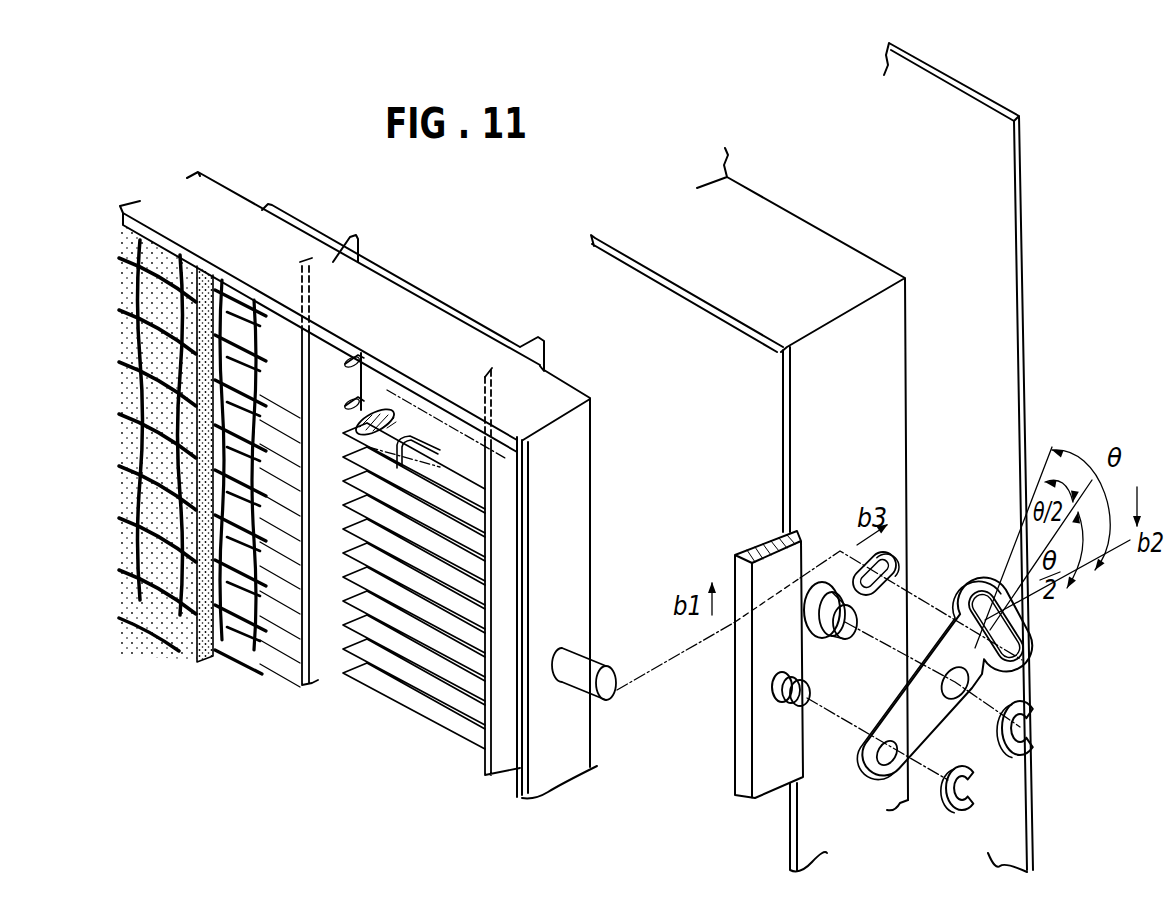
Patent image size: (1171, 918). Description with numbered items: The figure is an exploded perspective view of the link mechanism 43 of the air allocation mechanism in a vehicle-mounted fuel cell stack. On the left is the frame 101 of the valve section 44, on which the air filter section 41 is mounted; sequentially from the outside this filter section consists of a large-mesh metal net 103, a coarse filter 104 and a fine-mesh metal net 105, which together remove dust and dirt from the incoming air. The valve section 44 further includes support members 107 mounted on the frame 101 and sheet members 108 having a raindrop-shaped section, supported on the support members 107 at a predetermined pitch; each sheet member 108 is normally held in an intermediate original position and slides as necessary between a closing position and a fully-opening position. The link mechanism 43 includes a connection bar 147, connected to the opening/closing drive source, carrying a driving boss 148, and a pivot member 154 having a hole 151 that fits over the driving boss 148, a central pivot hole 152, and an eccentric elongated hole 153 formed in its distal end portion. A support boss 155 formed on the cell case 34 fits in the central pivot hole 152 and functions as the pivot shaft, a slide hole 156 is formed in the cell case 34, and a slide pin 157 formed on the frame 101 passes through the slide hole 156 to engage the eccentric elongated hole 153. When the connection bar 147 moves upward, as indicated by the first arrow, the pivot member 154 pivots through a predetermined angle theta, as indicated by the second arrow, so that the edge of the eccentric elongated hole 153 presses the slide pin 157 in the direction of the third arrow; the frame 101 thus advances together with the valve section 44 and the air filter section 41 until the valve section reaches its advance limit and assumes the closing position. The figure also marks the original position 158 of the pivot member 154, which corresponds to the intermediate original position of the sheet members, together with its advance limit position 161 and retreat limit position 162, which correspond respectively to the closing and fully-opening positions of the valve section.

The cell case 34 is at (661, 221).
The air filter section 41 is at (232, 695).
The link mechanism 43 is at (717, 466).
The valve section 44 is at (415, 418).
The frame 101 is at (232, 192).
The large-mesh metal net 103 is at (128, 613).
The coarse filter 104 is at (210, 658).
The fine-mesh metal net 105 is at (243, 640).
The support member 107 is at (325, 672).
The sheet member 108 is at (372, 410).
The connection bar 147 is at (735, 566).
The driving boss 148 is at (773, 696).
The hole 151 is at (888, 782).
The central pivot hole 152 is at (975, 699).
The eccentric elongated hole 153 is at (985, 676).
The pivot member 154 is at (948, 731).
The support boss 155 is at (843, 640).
The slide hole 156 is at (852, 578).
The slide pin 157 is at (584, 692).
The original position 158 is at (1088, 493).
The advance limit position 161 is at (1044, 446).
The retreat limit position 162 is at (1113, 550).